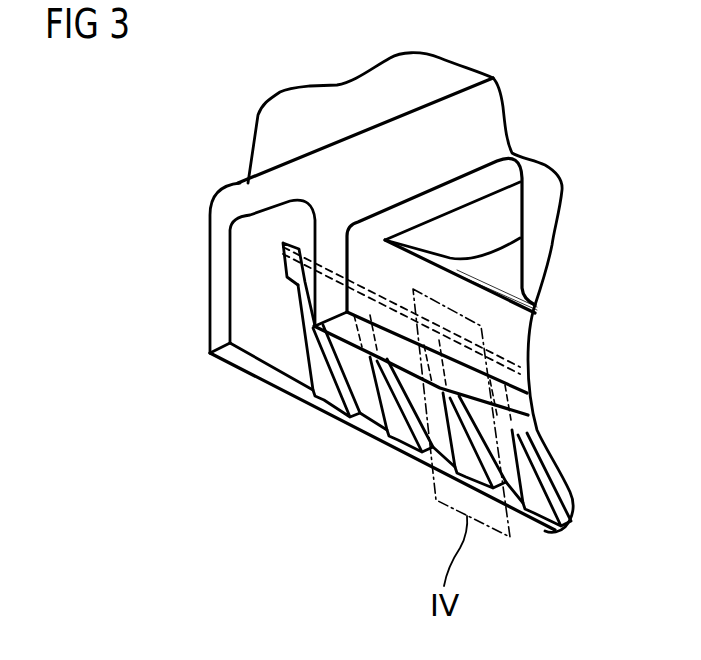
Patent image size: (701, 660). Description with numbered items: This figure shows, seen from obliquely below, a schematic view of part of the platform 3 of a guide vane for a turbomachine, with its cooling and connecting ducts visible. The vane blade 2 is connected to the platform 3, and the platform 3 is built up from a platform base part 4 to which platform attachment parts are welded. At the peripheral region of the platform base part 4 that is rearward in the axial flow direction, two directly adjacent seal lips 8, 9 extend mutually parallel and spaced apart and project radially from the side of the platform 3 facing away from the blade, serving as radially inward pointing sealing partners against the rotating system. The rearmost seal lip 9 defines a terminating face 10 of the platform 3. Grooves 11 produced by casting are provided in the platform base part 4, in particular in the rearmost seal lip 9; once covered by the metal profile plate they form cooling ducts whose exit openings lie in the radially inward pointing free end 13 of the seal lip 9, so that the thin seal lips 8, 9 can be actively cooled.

The vane blade 2 is at (404, 84).
The platform 3 is at (500, 113).
The platform base part 4 is at (220, 230).
The seal lip 8 is at (220, 322).
The seal lip 9 is at (332, 248).
The terminating face 10 is at (212, 285).
The grooves 11 is at (283, 240).
The free end 13 is at (253, 367).